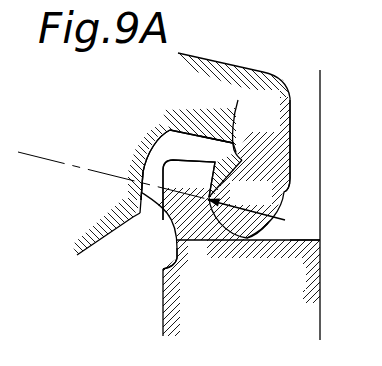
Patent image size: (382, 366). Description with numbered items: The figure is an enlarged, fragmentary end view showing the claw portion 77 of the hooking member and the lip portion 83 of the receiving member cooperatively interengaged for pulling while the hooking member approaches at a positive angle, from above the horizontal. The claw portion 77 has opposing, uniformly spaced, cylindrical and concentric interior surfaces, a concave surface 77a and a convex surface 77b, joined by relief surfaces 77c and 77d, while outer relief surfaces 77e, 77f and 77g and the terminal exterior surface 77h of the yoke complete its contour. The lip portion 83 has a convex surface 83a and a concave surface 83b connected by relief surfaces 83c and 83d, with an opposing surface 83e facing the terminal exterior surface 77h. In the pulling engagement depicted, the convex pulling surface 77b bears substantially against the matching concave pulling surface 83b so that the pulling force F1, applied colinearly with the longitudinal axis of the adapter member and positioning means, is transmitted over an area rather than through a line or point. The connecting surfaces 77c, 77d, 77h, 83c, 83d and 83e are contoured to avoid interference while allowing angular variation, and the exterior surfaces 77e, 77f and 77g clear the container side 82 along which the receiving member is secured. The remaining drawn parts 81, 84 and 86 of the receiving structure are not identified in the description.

The claw portion 77 is at (246, 78).
The concave surface 77a is at (150, 153).
The convex surface 77b is at (223, 197).
The relief surface 77c is at (237, 148).
The relief surface 77d is at (208, 137).
The outer relief surface 77e is at (268, 233).
The outer relief surface 77f is at (285, 192).
The outer relief surface 77g is at (291, 133).
The terminal exterior surface 77h is at (108, 237).
The base 81 is at (252, 263).
The side 82 is at (316, 324).
The lip portion 83 is at (186, 200).
The convex surface 83a is at (142, 186).
The concave surface 83b is at (189, 190).
The relief surface 83c is at (245, 101).
The relief surface 83d is at (174, 129).
The opposing surface 83e is at (172, 262).
The top surface of base 84 is at (296, 243).
The side face of base 86 is at (163, 304).
The pulling force F1 is at (281, 221).